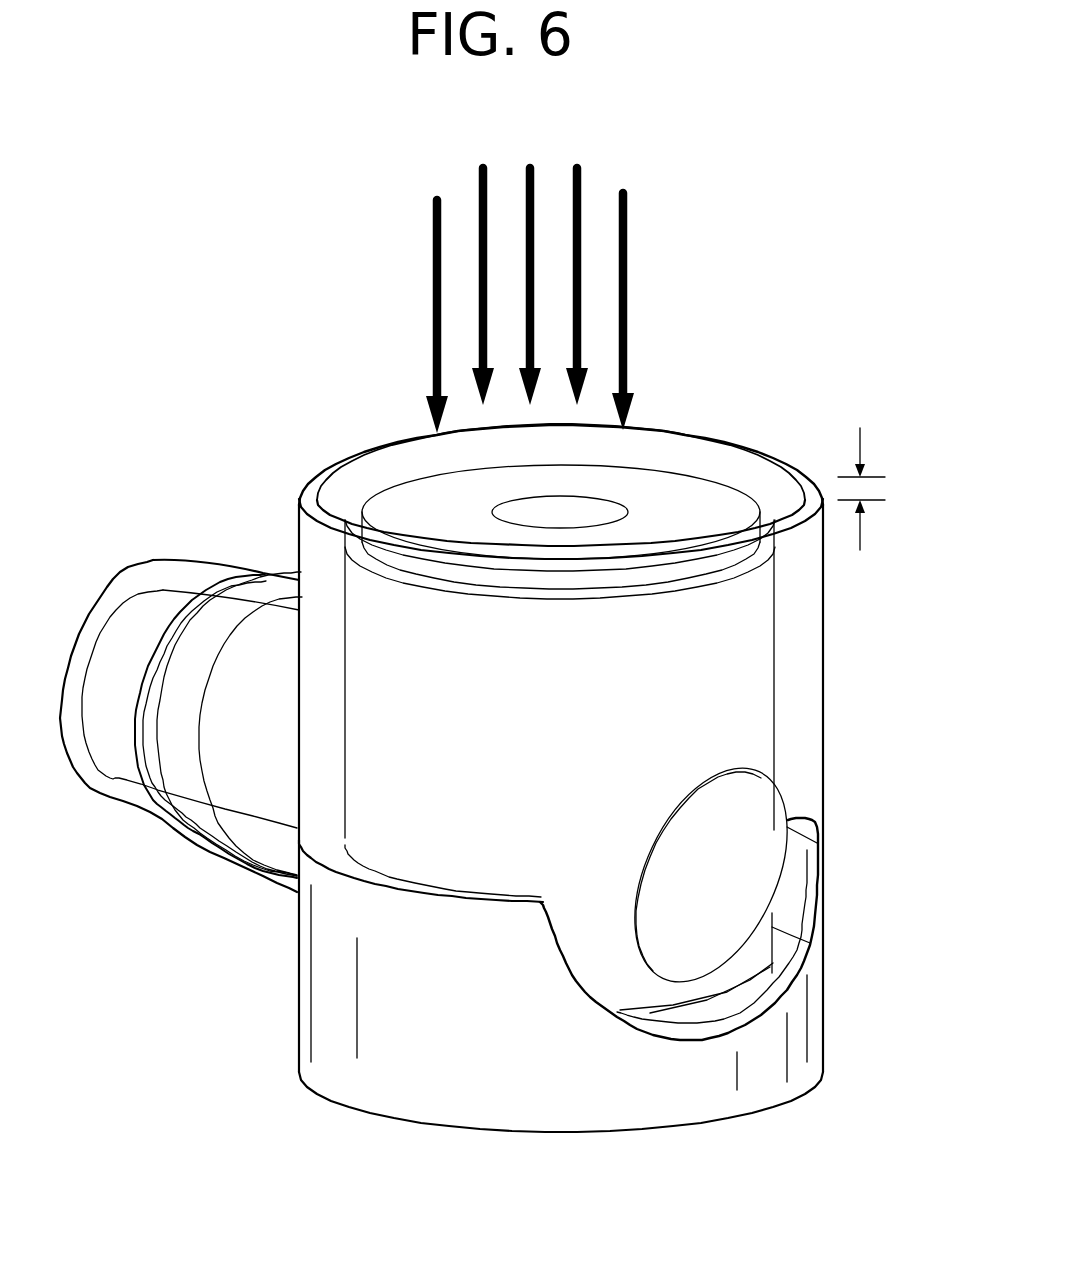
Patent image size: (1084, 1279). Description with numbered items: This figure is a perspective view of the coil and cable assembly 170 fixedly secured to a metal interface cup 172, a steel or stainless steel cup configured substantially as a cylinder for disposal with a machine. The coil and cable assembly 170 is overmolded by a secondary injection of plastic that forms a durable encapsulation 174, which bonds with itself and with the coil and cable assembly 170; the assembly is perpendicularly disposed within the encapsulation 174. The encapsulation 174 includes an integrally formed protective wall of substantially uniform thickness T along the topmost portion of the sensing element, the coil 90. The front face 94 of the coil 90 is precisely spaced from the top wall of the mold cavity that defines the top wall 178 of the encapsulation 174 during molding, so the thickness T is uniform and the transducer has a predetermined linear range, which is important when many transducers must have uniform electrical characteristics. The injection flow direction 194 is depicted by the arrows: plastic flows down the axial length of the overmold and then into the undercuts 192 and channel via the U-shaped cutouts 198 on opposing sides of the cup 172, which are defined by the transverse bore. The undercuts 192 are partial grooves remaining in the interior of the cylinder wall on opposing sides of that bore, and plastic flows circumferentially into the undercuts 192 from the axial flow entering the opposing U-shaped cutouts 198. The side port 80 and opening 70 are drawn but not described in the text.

The flow direction 194 is at (627, 228).
The top wall 178 is at (383, 473).
The coil 90 is at (697, 500).
The front face 94 is at (684, 522).
The uniform thickness T is at (860, 440).
The encapsulation 174 is at (810, 597).
The coil and cable assembly 170 is at (748, 689).
The side opening 70 is at (773, 830).
The metal interface cup 172 is at (522, 1045).
The U-shaped cutout 198 is at (750, 1020).
The undercut 192 is at (611, 990).
The side port 80 is at (245, 767).